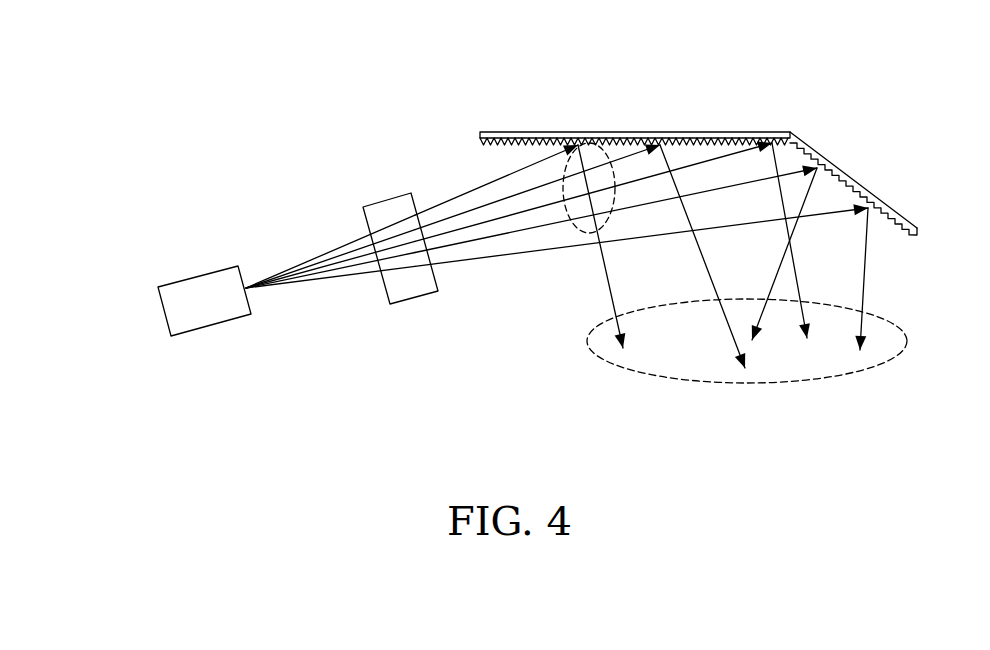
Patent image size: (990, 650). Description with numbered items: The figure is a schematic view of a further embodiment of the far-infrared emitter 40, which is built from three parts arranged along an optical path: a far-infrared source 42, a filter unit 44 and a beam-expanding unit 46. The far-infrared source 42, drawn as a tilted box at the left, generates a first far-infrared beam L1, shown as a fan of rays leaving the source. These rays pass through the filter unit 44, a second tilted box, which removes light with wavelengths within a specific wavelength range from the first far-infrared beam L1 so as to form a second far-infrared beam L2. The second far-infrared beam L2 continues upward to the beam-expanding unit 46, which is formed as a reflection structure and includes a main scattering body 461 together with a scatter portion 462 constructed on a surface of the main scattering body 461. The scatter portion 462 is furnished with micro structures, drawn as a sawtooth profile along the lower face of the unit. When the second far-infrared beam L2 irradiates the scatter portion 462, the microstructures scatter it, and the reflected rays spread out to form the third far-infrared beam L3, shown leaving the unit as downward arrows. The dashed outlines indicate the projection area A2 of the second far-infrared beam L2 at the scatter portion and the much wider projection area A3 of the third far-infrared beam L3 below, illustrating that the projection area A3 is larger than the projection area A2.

The far-infrared emitter 40 is at (122, 73).
The far-infrared source 42 is at (180, 282).
The filter unit 44 is at (385, 200).
The beam-expanding unit 46 is at (666, 149).
The main scattering body 461 is at (585, 140).
The scatter portion 462 is at (500, 155).
The first far-infrared beam L1 is at (322, 283).
The second far-infrared beam L2 is at (498, 250).
The third far-infrared beam L3 is at (875, 275).
The projection area of the second far-infrared beam A2 is at (585, 232).
The projection area of the third far-infrared beam A3 is at (603, 357).